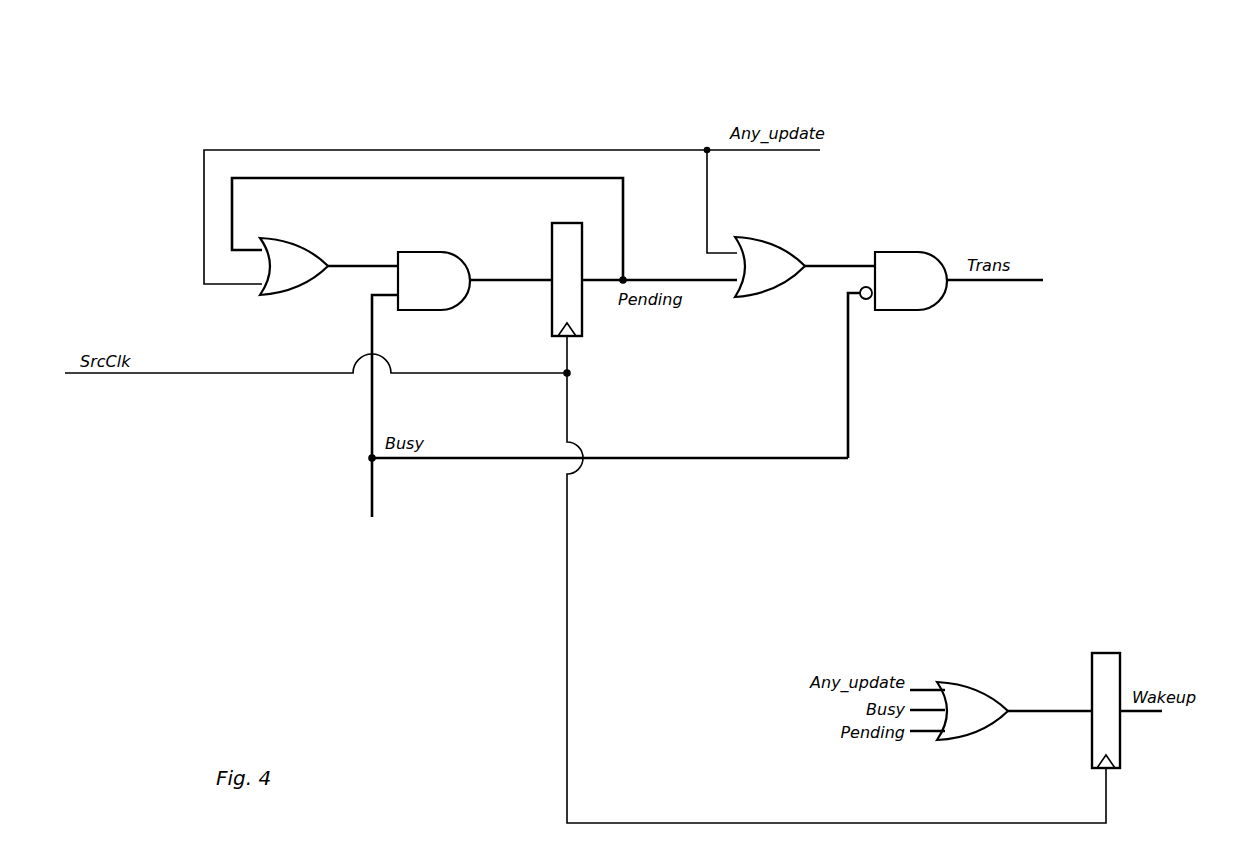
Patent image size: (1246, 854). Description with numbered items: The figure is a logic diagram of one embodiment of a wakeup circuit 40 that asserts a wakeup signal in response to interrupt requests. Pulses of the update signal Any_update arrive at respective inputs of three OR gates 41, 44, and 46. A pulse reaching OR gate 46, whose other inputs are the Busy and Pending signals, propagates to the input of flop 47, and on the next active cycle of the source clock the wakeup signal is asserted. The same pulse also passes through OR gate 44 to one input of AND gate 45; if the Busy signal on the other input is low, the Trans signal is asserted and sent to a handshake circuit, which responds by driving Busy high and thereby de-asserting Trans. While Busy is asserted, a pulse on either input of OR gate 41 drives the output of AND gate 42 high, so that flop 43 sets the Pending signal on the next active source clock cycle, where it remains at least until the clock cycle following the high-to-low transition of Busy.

The wakeup circuit 40 is at (893, 62).
The OR gate 41 is at (290, 230).
The AND gate 42 is at (418, 246).
The flop 43 is at (557, 220).
The OR gate 44 is at (755, 230).
The AND gate 45 is at (905, 248).
The OR gate 46 is at (950, 676).
The flop 47 is at (1099, 653).